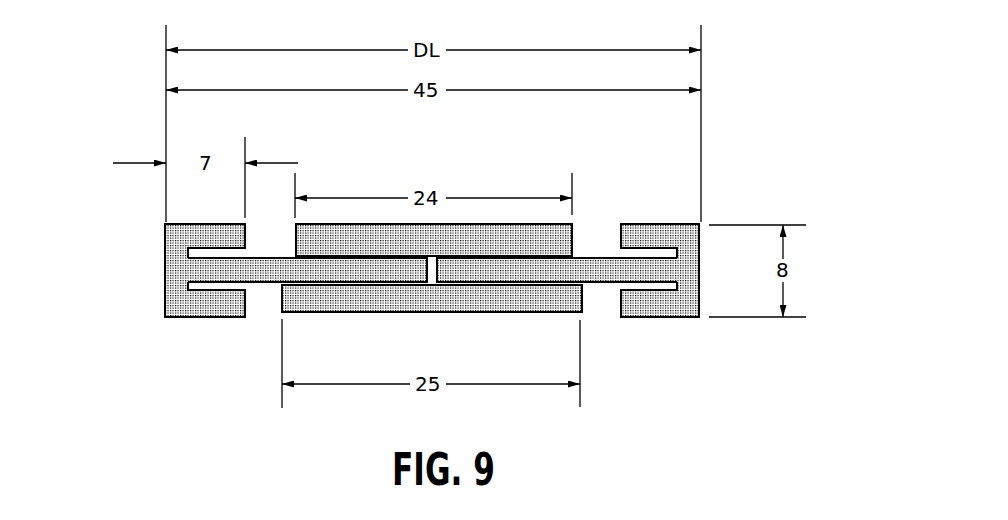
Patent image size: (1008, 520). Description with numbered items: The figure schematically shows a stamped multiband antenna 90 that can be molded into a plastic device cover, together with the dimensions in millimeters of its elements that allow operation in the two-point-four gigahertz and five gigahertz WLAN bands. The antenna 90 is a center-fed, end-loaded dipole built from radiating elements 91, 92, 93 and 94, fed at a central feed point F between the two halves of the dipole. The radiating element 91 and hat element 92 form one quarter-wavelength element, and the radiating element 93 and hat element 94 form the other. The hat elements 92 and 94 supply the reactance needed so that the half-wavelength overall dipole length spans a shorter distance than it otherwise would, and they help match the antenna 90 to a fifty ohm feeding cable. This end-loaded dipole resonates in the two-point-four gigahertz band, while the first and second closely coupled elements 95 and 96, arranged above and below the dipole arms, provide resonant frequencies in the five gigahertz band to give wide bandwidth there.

The multiband antenna 90 is at (459, 245).
The radiating element 91 is at (598, 283).
The hat element 92 is at (658, 317).
The radiating element 93 is at (266, 258).
The hat element 94 is at (165, 276).
The first coupled element 95 is at (545, 220).
The second coupled element 96 is at (422, 313).
The feed point F is at (422, 282).